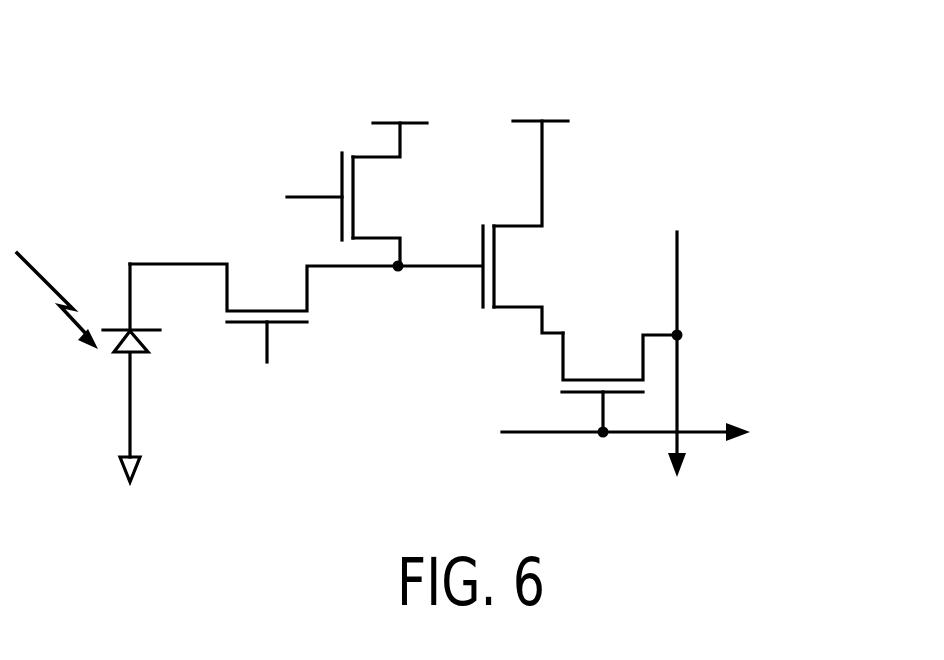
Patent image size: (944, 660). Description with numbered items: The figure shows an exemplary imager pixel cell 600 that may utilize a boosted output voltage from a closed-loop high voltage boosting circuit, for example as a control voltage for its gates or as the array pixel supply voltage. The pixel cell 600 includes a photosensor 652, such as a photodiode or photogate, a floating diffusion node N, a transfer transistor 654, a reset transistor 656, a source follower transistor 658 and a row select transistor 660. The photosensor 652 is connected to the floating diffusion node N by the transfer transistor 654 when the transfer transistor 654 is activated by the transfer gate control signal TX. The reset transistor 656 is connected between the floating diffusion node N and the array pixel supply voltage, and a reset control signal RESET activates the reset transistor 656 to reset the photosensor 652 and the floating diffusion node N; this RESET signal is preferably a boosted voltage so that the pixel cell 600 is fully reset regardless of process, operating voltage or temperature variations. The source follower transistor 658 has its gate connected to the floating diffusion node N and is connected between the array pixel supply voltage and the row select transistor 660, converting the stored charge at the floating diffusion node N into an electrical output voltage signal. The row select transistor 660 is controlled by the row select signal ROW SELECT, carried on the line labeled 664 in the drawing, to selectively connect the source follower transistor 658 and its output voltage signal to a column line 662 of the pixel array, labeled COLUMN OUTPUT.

The imager pixel cell 600 is at (695, 115).
The photosensor 652 is at (114, 352).
The transfer transistor 654 is at (310, 305).
The reset transistor 656 is at (342, 153).
The floating diffusion node N is at (402, 263).
The source follower transistor 658 is at (493, 307).
The row select transistor 660 is at (567, 330).
The column line 662 is at (677, 265).
The row select line 664 is at (705, 430).